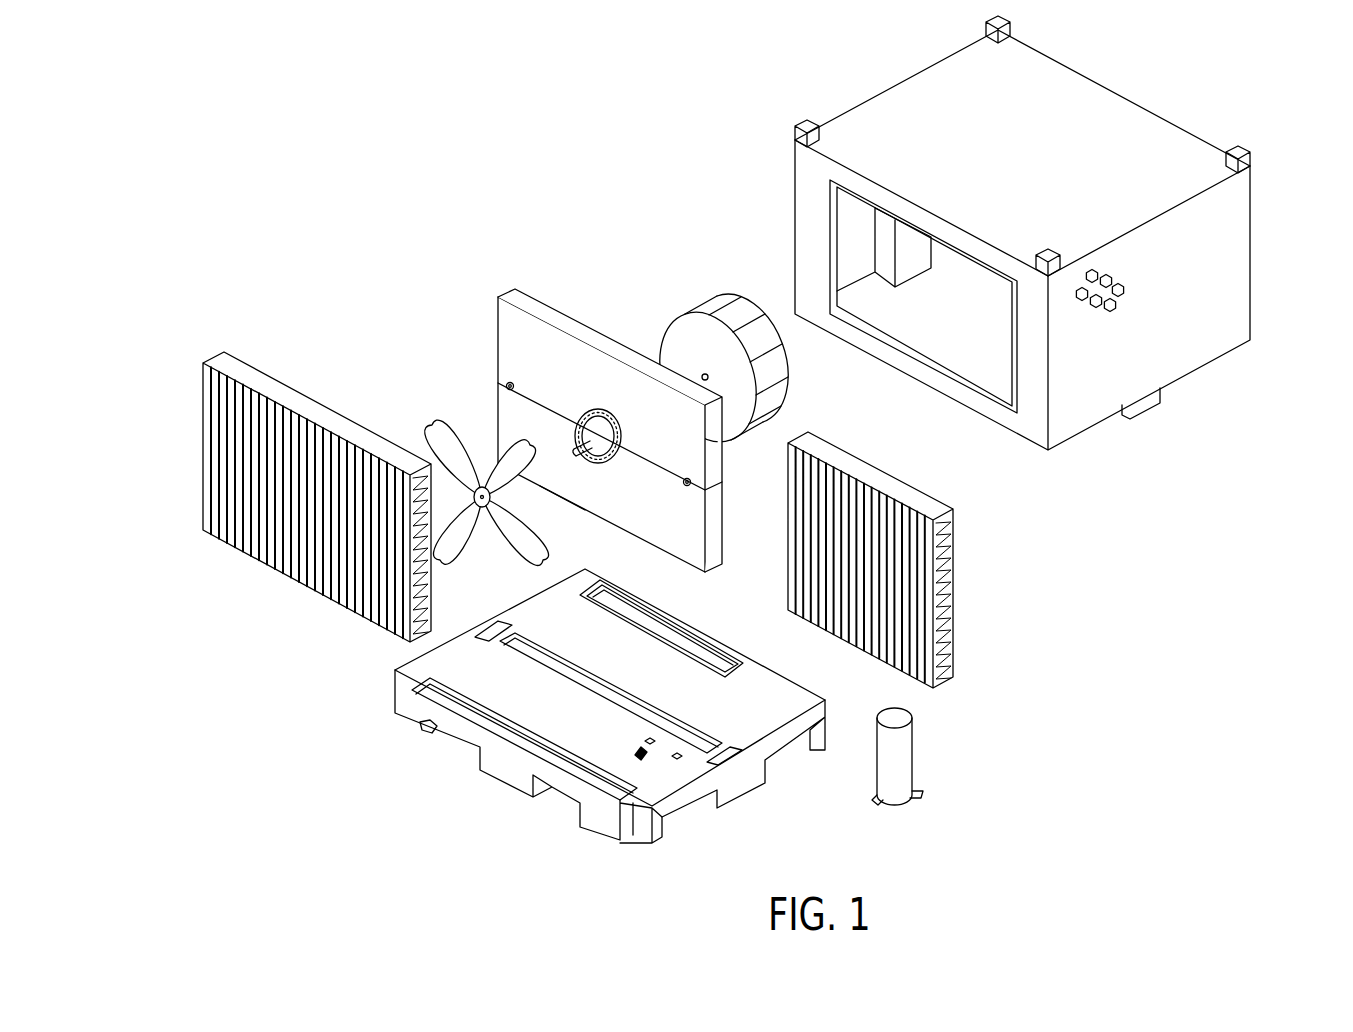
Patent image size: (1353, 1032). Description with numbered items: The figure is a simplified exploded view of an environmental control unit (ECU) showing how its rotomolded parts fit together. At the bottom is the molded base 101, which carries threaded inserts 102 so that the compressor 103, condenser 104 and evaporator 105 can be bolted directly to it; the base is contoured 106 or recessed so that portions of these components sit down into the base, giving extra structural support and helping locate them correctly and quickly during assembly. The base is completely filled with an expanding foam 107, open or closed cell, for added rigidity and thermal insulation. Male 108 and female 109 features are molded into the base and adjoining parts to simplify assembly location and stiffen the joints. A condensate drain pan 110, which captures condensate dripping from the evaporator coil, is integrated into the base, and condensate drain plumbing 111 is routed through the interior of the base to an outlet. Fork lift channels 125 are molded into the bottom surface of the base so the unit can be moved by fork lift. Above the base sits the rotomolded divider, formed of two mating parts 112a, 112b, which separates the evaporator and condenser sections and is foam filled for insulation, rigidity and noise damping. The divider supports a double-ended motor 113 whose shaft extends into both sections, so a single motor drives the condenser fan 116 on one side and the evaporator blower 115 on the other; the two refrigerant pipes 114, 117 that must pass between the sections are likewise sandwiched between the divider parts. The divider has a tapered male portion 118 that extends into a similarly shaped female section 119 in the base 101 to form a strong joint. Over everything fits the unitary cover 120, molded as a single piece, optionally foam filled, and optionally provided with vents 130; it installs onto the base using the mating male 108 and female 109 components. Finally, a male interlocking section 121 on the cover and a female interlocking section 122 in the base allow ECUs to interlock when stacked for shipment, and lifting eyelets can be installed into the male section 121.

The molded base 101 is at (610, 737).
The threaded inserts 102 is at (636, 748).
The compressor 103 is at (900, 752).
The condenser 104 is at (226, 361).
The evaporator 105 is at (947, 548).
The contoured recess 106 is at (612, 787).
The expanding foam 107 is at (426, 737).
The male feature 108 is at (1147, 403).
The female feature 109 is at (733, 757).
The condensate drain pan 110 is at (730, 657).
The condensate drain plumbing 111 is at (700, 635).
The divider mating part 112a is at (518, 413).
The divider mating part 112b is at (512, 320).
The double-ended motor 113 is at (578, 417).
The refrigerant line 114 is at (507, 383).
The evaporator blower 115 is at (680, 332).
The condenser fan 116 is at (443, 440).
The refrigerant line 117 is at (684, 479).
The tapered male portion 118 is at (562, 495).
The female section 119 is at (672, 730).
The unitary cover 120 is at (1058, 233).
The male interlocking section 121 is at (1252, 170).
The female interlocking section 122 is at (643, 833).
The fork lift channels 125 is at (560, 797).
The vents 130 is at (1123, 297).